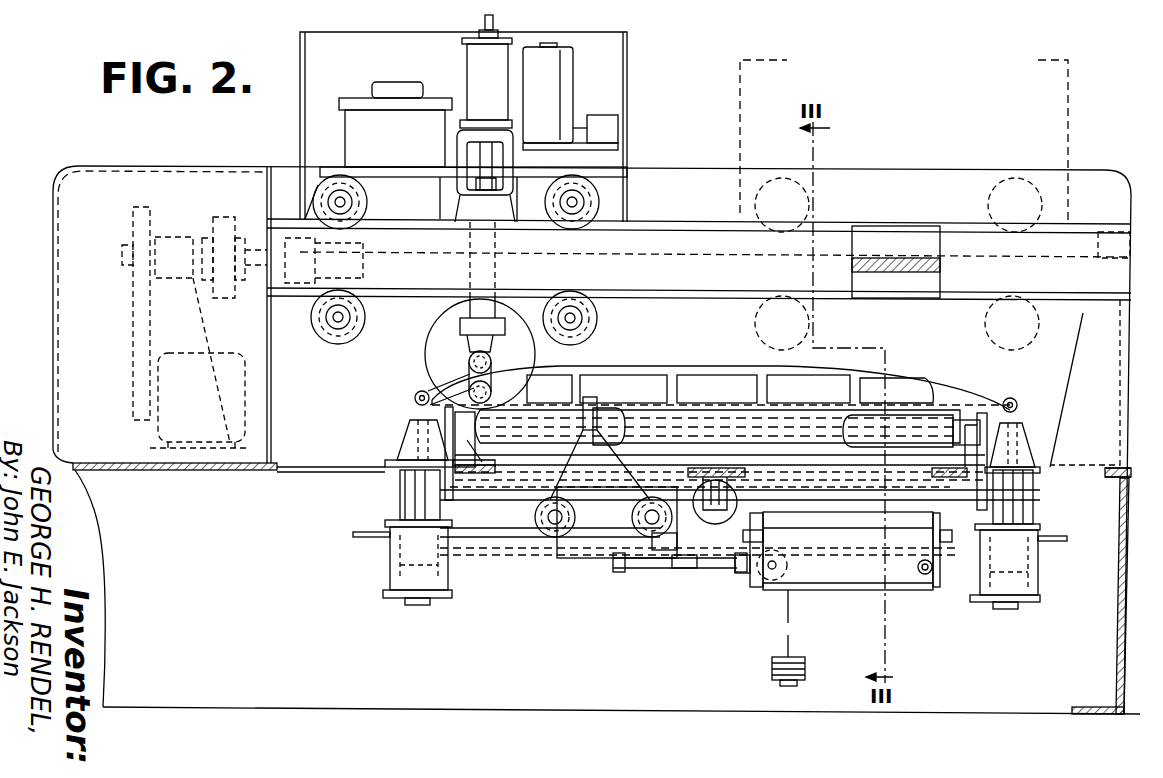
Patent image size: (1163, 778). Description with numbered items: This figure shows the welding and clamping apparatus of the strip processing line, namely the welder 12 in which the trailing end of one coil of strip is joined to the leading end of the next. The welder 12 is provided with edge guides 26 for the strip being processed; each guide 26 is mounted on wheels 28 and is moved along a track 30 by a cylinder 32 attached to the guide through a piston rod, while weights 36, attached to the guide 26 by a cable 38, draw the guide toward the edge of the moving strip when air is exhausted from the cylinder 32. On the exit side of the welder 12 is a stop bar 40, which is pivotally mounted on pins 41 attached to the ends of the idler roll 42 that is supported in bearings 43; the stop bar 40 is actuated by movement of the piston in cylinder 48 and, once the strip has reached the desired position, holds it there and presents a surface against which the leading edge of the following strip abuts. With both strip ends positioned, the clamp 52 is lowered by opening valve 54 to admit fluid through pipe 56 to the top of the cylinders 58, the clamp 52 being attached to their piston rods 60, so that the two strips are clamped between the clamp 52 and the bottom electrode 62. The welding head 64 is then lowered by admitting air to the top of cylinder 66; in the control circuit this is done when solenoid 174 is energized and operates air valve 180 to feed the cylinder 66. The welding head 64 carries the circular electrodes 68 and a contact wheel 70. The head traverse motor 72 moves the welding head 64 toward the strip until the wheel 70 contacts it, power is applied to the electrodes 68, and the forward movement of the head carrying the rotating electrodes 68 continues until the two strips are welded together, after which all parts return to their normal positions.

The welder 12 is at (677, 168).
The edge guides 26 is at (593, 398).
The wheels 28 is at (540, 517).
The track 30 is at (500, 537).
The cylinder 32 is at (835, 570).
The weights 36 is at (805, 668).
The cable 38 is at (786, 626).
The stop bar 40 is at (985, 455).
The pins 41 is at (1022, 440).
The idler roll 42 is at (845, 445).
The bearings 43 is at (962, 425).
The cylinder 48 is at (708, 515).
The clamp 52 is at (725, 378).
The valve 54 is at (718, 570).
The pipe 56 is at (1050, 538).
The cylinders 58 is at (1017, 587).
The piston rods 60 is at (1017, 403).
The bottom electrode 62 is at (753, 418).
The welding head 64 is at (472, 312).
The cylinder 66 is at (473, 61).
The circular electrodes 68 is at (432, 341).
The contact wheel 70 is at (468, 388).
The head traverse motor 72 is at (200, 430).
The solenoid 174 is at (562, 72).
The air valve 180 is at (618, 128).